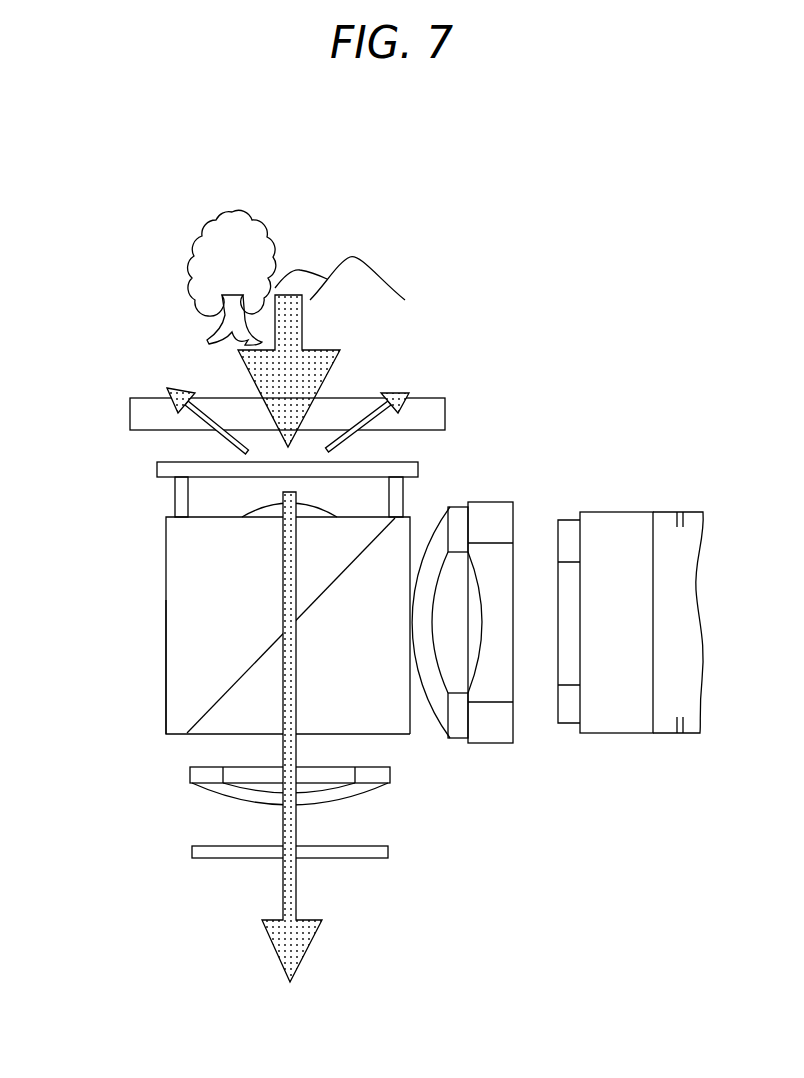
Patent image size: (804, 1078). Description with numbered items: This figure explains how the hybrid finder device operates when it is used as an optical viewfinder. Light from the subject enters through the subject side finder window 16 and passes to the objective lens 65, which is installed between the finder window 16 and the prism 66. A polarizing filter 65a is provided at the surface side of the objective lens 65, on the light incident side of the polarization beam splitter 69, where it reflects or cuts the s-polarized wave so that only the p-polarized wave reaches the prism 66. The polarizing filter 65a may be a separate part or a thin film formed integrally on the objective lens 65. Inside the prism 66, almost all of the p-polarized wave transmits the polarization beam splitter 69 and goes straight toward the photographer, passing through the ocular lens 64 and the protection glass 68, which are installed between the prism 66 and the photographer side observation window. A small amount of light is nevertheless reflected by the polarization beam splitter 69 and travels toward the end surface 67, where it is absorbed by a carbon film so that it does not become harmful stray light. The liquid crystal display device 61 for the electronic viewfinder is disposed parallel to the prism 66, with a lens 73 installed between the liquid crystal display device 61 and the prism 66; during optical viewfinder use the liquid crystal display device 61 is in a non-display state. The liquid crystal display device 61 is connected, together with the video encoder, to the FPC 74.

The finder window 16 is at (440, 413).
The polarizing filter 65a is at (167, 467).
The objective lens 65 is at (207, 495).
The prism 66 is at (180, 592).
The end surface 67 is at (167, 703).
The polarization beam splitter 69 is at (227, 688).
The ocular lens 64 is at (193, 775).
The protection glass 68 is at (388, 852).
The lens 73 is at (458, 523).
The liquid crystal display device 61 is at (610, 522).
The FPC 74 is at (673, 527).